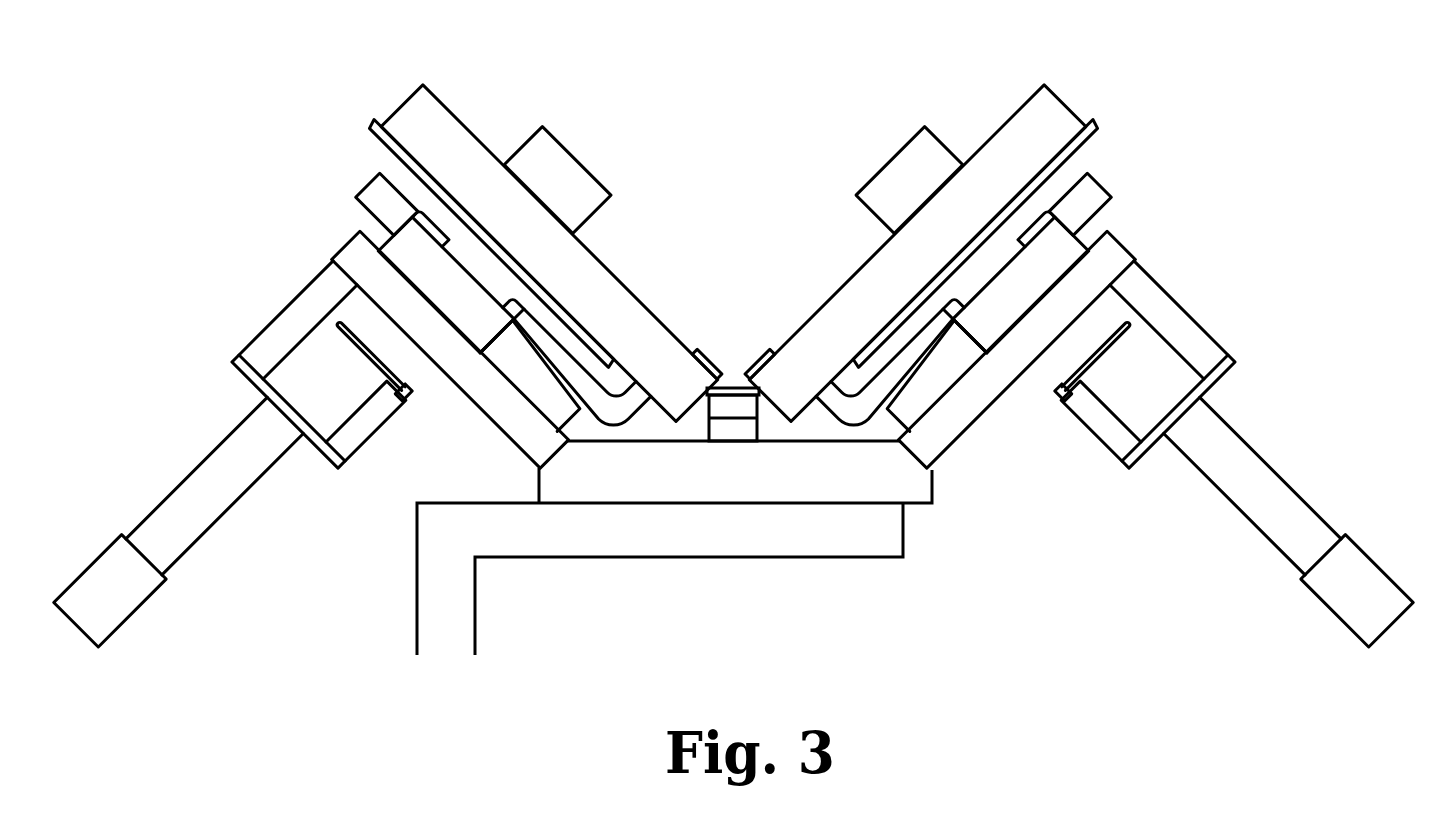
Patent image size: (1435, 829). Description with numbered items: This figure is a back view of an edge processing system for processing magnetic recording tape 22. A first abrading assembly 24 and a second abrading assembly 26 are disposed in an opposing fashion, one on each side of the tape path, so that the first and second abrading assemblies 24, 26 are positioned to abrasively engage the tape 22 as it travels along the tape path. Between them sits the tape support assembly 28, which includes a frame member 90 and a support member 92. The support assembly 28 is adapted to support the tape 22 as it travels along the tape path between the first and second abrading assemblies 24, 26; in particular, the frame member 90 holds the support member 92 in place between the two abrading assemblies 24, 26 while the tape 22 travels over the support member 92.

The magnetic recording tape 22 is at (733, 389).
The first abrading assembly 24 is at (1103, 168).
The second abrading assembly 26 is at (323, 152).
The tape support assembly 28 is at (933, 556).
The frame member 90 is at (615, 537).
The support member 92 is at (738, 416).